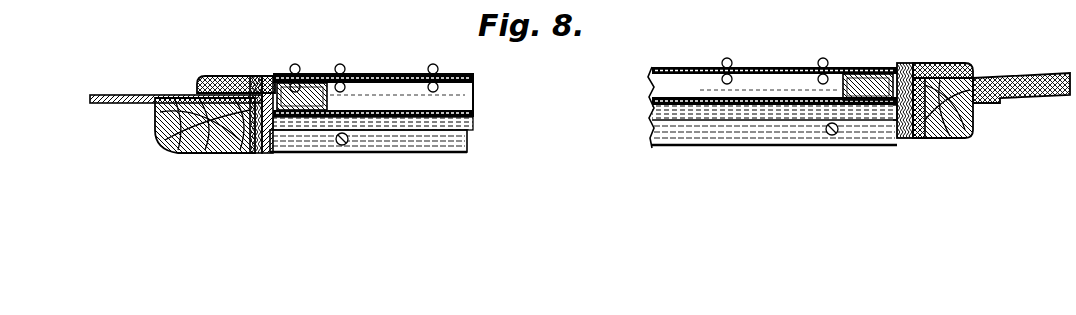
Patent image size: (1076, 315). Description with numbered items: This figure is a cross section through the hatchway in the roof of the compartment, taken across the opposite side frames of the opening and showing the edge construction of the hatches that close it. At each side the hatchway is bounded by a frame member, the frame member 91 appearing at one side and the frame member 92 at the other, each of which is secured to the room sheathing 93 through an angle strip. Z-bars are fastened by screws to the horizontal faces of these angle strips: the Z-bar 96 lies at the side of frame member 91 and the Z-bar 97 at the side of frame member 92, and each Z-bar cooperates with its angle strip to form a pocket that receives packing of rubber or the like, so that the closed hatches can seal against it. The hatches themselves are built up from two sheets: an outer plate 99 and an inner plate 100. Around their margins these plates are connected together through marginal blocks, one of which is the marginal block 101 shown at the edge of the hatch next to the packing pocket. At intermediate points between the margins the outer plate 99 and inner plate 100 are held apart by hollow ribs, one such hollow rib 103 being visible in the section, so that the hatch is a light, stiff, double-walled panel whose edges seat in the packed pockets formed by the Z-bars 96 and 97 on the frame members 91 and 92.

The room sheathing 93 is at (120, 73).
The frame member 91 is at (162, 138).
The marginal block 101 is at (318, 83).
The outer plate 99 is at (373, 75).
The Z-bar 96 is at (270, 120).
The inner plate 100 is at (432, 113).
The hollow rib 103 is at (677, 88).
The Z-bar 97 is at (893, 120).
The frame member 92 is at (958, 130).